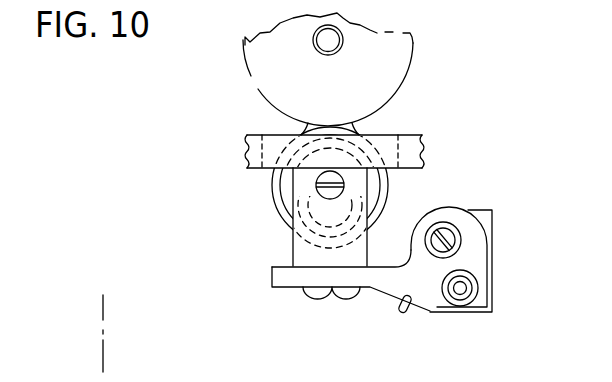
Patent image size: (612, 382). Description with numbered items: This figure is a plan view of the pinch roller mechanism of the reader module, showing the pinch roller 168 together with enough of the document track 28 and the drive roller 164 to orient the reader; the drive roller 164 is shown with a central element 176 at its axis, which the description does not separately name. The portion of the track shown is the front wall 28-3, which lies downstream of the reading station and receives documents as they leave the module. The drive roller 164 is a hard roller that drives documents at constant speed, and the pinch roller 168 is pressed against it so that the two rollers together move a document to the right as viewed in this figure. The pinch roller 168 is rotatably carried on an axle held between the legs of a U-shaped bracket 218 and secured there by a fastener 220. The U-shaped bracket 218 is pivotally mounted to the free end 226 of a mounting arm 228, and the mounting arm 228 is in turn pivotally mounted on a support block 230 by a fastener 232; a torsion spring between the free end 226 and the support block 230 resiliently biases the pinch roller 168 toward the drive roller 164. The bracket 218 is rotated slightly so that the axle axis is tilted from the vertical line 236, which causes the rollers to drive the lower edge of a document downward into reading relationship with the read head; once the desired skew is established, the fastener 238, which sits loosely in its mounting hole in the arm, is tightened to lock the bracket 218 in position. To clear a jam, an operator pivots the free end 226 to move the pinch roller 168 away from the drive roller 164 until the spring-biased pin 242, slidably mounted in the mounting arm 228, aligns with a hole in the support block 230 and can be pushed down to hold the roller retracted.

The drive roller 164 is at (390, 80).
The pivot pin 176 is at (330, 41).
The document track 28 is at (282, 124).
The front wall 28-3 is at (422, 138).
The pinch roller 168 is at (290, 210).
The U-shaped bracket 218 is at (305, 252).
The fastener 220 is at (318, 182).
The free end 226 is at (283, 278).
The fastener 238 is at (318, 290).
The support block 230 is at (484, 223).
The fastener 232 is at (453, 237).
The pin 242 is at (465, 288).
The mounting arm 228 is at (412, 275).
The vertical line 236 is at (103, 313).